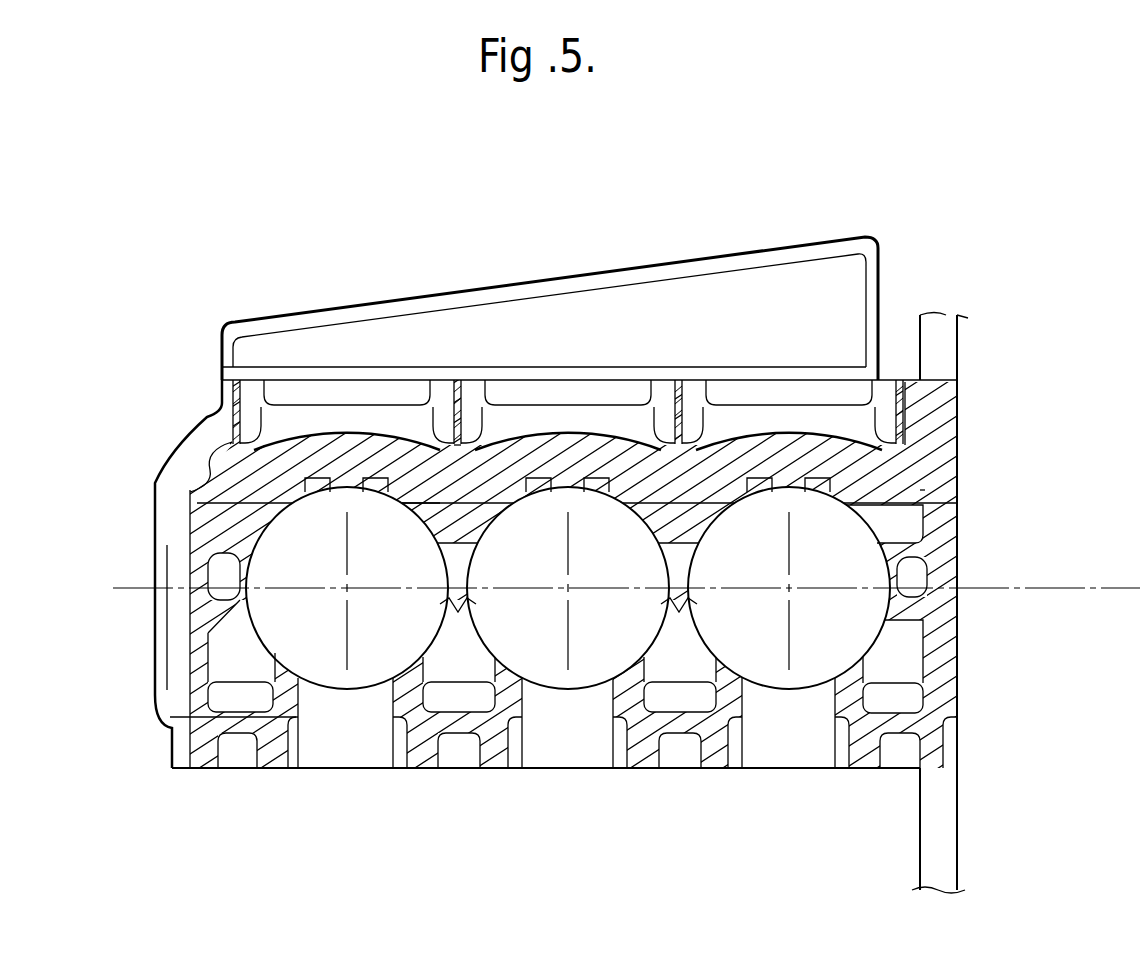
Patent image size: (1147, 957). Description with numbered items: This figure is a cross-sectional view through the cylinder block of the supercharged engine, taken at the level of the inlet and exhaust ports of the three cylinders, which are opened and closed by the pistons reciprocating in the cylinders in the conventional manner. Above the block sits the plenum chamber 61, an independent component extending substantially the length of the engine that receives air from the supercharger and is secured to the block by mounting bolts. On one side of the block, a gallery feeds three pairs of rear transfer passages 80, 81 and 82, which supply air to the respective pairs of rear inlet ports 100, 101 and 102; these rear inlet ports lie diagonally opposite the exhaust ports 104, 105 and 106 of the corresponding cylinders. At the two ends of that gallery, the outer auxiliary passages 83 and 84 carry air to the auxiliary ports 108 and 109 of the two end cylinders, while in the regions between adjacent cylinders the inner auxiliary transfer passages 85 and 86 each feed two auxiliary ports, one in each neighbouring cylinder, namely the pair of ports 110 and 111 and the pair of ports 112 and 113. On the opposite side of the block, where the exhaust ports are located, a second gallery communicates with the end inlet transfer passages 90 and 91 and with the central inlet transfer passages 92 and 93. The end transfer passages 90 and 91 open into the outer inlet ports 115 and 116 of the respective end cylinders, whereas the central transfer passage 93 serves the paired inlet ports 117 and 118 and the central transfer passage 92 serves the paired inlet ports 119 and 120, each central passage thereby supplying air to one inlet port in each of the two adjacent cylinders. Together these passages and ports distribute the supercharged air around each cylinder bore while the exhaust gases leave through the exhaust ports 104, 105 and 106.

The plenum chamber 61 is at (892, 240).
The rear transfer passage 80 is at (315, 484).
The rear transfer passage 81 is at (651, 527).
The rear transfer passage 82 is at (906, 488).
The auxiliary passage 83 is at (923, 507).
The auxiliary passage 84 is at (236, 532).
The auxiliary transfer passage 85 is at (731, 484).
The auxiliary transfer passage 86 is at (461, 530).
The end inlet transfer passage 90 is at (237, 697).
The end inlet transfer passage 91 is at (895, 697).
The inlet transfer passage 92 is at (682, 690).
The inlet transfer passage 93 is at (458, 690).
The rear inlet port 100 is at (367, 483).
The rear inlet port 101 is at (545, 470).
The rear inlet port 102 is at (828, 483).
The exhaust port 104 is at (325, 727).
The exhaust port 105 is at (585, 735).
The exhaust port 106 is at (805, 738).
The auxiliary port 108 is at (882, 535).
The auxiliary port 109 is at (263, 523).
The auxiliary port 110 is at (773, 472).
The auxiliary port 111 is at (681, 525).
The auxiliary port 112 is at (523, 485).
The auxiliary port 113 is at (421, 500).
The outer inlet port 115 is at (242, 641).
The outer inlet port 116 is at (902, 622).
The paired inlet port 117 is at (475, 622).
The paired inlet port 118 is at (433, 626).
The paired inlet port 119 is at (710, 635).
The paired inlet port 120 is at (657, 627).